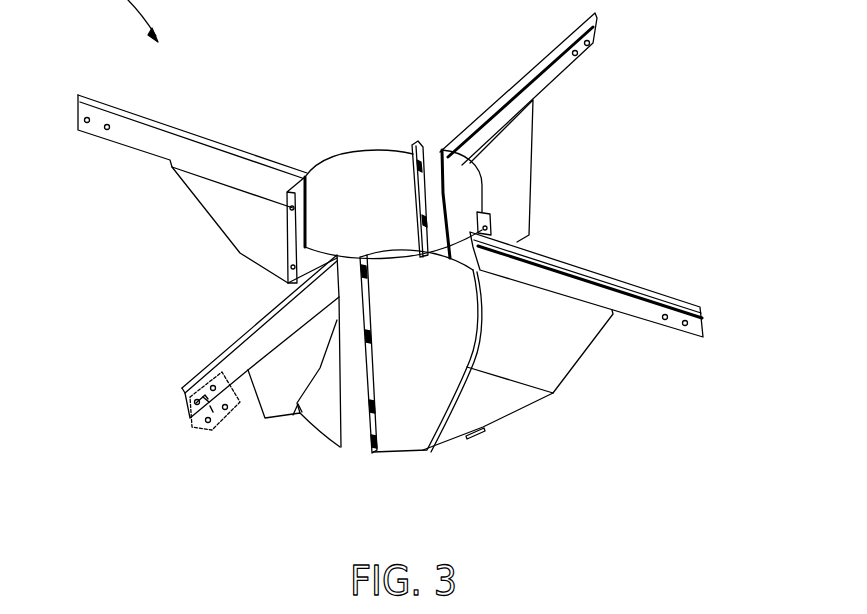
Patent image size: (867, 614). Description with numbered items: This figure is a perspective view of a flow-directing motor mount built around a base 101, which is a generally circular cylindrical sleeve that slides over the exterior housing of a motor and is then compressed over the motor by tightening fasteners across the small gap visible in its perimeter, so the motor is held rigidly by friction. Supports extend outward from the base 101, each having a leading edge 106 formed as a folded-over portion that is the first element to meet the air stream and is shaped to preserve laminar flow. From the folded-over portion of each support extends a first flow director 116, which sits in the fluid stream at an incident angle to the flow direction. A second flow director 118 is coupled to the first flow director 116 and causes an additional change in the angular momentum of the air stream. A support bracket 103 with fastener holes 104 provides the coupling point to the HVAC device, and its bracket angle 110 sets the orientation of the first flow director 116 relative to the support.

The base 101 is at (350, 178).
The support bracket 103 is at (210, 433).
The fastener hole 104 is at (420, 155).
The leading edge 106 is at (160, 125).
The bracket angle 110 is at (207, 427).
The first flow director 116 is at (233, 218).
The second flow director 118 is at (470, 433).